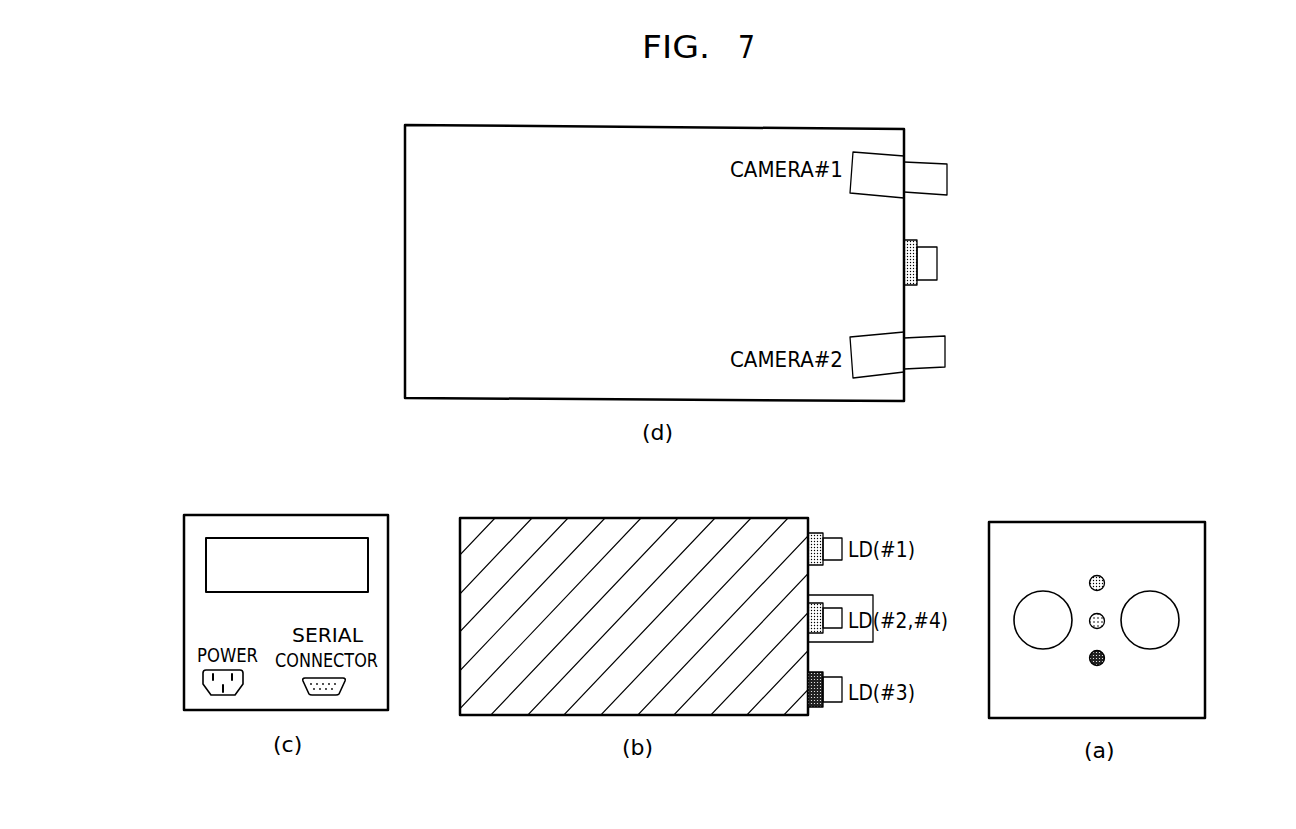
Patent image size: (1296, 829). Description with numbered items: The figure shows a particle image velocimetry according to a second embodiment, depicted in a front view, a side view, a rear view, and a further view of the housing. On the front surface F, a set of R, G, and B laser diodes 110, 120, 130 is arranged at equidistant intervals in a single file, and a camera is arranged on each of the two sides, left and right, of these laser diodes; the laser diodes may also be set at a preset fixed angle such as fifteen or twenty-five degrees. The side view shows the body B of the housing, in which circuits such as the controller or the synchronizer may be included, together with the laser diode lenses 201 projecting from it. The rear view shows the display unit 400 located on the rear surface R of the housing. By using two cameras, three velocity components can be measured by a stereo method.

The camera lens 201 is at (873, 642).
The display unit 400 is at (287, 543).
The rear surface R is at (365, 519).
The body B is at (635, 528).
The front surface F is at (1193, 624).
The R laser diode 110 is at (1097, 575).
The G laser diode 120 is at (1102, 627).
The B laser diode 130 is at (1091, 664).